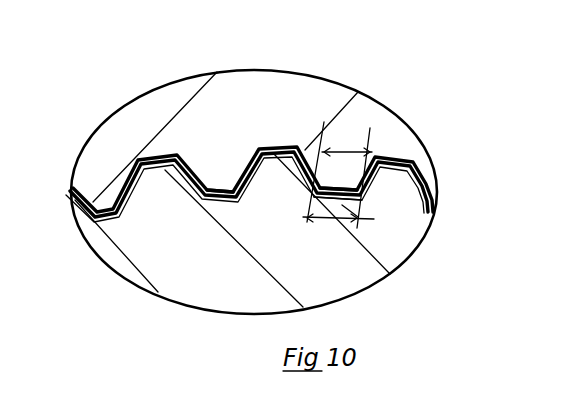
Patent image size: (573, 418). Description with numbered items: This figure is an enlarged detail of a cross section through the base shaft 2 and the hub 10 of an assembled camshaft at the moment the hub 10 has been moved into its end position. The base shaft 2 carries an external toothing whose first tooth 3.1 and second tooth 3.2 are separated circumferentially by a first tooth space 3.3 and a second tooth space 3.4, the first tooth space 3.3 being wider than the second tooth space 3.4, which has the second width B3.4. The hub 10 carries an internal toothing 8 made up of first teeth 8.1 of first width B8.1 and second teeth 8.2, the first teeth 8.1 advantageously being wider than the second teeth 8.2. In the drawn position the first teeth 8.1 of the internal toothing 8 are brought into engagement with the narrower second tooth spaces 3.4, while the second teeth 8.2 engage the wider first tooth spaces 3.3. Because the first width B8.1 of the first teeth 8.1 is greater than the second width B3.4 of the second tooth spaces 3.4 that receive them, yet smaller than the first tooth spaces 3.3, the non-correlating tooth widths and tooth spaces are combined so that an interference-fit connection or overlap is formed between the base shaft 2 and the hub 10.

The base shaft 2 is at (370, 274).
The hub 10 is at (110, 148).
The internal toothing 8 is at (300, 110).
The first teeth 8.1 is at (337, 182).
The second teeth 8.2 is at (223, 175).
The first width B8.1 is at (328, 142).
The second width B3.4 is at (338, 232).
The first tooth 3.1 is at (275, 173).
The second tooth 3.2 is at (120, 247).
The first tooth space 3.3 is at (220, 207).
The second tooth space 3.4 is at (364, 216).